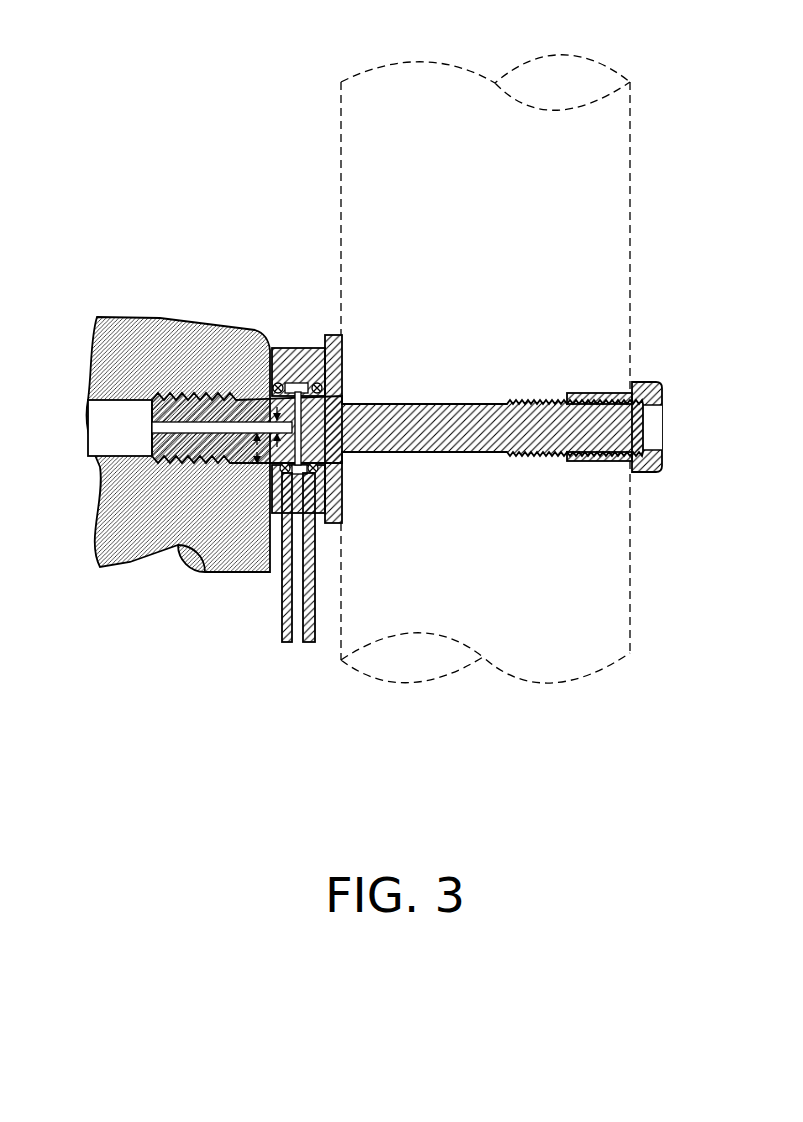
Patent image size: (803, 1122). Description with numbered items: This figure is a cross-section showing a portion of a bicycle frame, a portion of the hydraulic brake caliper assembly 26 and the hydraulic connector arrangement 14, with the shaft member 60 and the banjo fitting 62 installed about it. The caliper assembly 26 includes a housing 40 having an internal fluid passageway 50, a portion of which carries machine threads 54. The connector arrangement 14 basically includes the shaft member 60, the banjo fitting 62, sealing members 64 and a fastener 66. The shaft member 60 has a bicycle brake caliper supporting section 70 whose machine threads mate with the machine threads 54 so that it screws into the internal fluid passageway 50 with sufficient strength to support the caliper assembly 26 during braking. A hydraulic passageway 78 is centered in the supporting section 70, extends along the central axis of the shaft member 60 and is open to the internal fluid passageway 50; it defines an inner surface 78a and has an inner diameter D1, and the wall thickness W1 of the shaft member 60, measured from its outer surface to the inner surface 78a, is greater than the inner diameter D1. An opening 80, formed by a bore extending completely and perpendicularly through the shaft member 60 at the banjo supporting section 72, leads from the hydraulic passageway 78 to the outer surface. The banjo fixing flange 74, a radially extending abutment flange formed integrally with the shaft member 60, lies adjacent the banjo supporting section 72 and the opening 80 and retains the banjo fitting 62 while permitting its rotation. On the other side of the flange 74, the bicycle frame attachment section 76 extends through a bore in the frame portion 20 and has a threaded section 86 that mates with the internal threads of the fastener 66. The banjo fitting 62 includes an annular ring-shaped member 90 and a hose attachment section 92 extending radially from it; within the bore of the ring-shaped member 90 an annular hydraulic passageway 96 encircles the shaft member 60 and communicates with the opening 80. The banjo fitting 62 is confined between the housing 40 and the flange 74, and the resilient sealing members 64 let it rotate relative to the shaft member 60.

The hydraulic connector arrangement 14 is at (386, 336).
The frame portion 20 is at (607, 172).
The hydraulic brake caliper assembly 26 is at (115, 332).
The housing 40 is at (150, 322).
The internal fluid passageway 50 is at (103, 417).
The machine threads 54 is at (182, 392).
The shaft member 60 is at (458, 404).
The banjo fitting 62 is at (302, 347).
The sealing members 64 is at (283, 389).
The fastener 66 is at (662, 390).
The bicycle brake caliper supporting section 70 is at (177, 460).
The banjo supporting section 72 is at (320, 458).
The banjo fixing flange 74 is at (338, 335).
The bicycle frame attachment section 76 is at (524, 448).
The hydraulic passageway 78 is at (220, 430).
The inner surface 78a is at (205, 432).
The opening 80 is at (287, 462).
The threaded section 86 is at (602, 393).
The annular ring-shaped member 90 is at (317, 498).
The hose attachment section 92 is at (307, 587).
The annular hydraulic passageway 96 is at (303, 381).
The inner diameter D1 is at (275, 428).
The wall thickness W1 is at (252, 445).